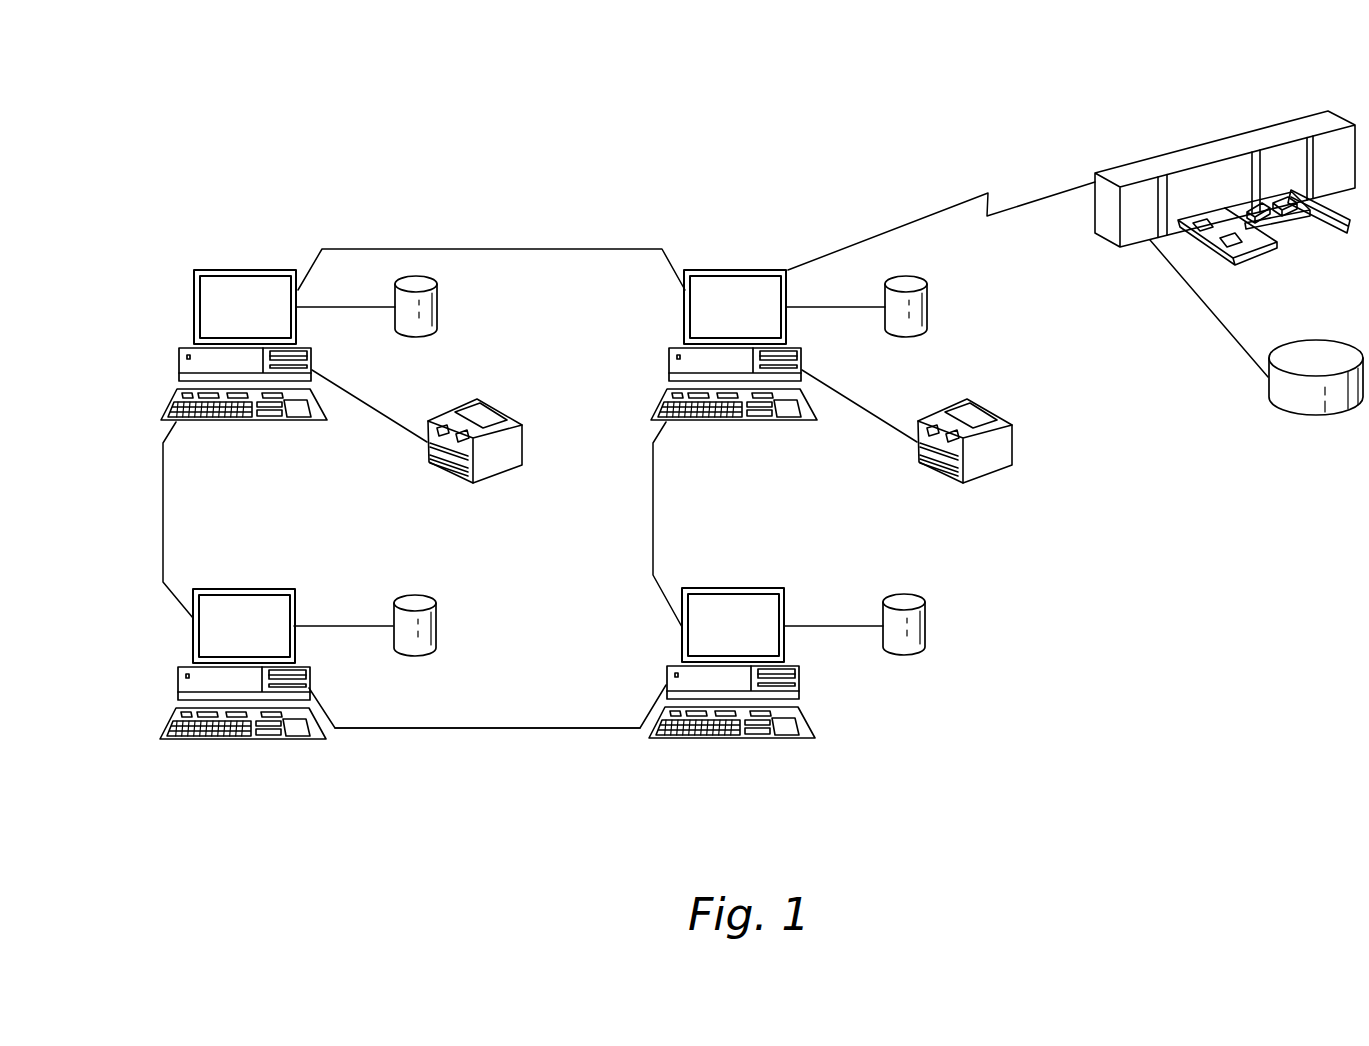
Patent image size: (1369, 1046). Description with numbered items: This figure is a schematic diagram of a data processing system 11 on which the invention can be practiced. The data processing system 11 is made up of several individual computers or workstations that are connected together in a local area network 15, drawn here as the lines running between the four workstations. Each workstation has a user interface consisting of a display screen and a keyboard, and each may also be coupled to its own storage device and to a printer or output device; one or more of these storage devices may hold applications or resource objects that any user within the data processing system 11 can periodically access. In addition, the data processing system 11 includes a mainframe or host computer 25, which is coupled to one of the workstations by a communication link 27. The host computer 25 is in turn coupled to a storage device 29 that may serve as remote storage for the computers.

The data processing system 11 is at (431, 198).
The local area network 15 is at (515, 728).
The mainframe or host computer 25 is at (1190, 147).
The communication link 27 is at (1018, 207).
The storage device 29 is at (1303, 413).